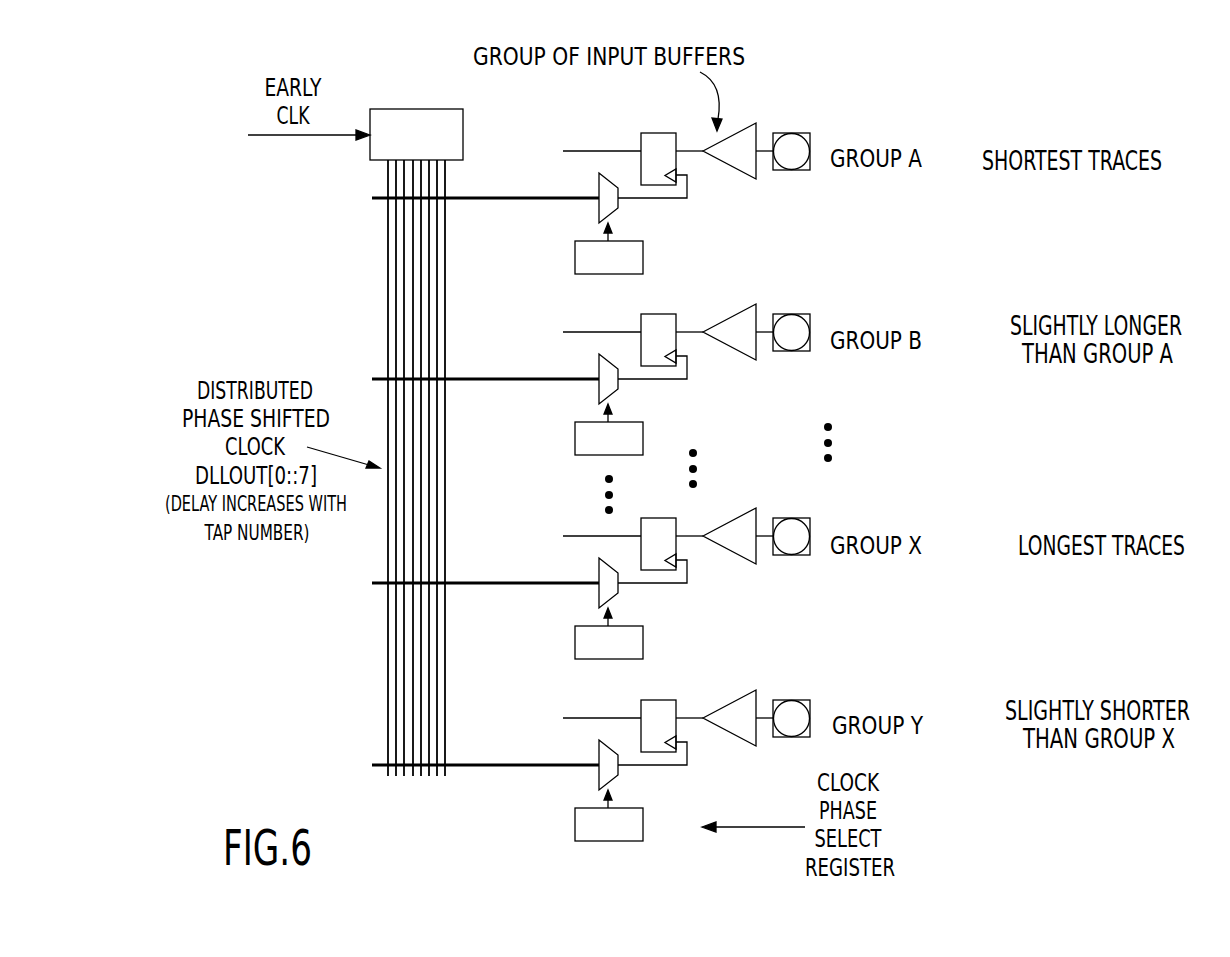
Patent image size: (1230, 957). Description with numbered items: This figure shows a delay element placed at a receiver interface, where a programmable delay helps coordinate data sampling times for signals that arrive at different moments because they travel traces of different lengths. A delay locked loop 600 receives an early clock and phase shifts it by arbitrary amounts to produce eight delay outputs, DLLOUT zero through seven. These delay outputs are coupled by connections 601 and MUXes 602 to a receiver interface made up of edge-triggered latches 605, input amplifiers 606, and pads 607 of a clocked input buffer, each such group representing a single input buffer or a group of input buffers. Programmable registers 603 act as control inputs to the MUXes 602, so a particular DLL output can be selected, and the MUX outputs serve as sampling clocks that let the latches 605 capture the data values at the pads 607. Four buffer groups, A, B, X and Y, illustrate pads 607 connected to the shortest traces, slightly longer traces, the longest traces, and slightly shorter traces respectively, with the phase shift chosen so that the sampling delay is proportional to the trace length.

The delay locked loop 600 is at (405, 109).
The connections 601 is at (487, 197).
The MUXes 602 is at (594, 206).
The programmable registers 603 is at (575, 260).
The edge-triggered latches 605 is at (650, 132).
The input amplifiers 606 is at (736, 128).
The pads 607 is at (800, 133).